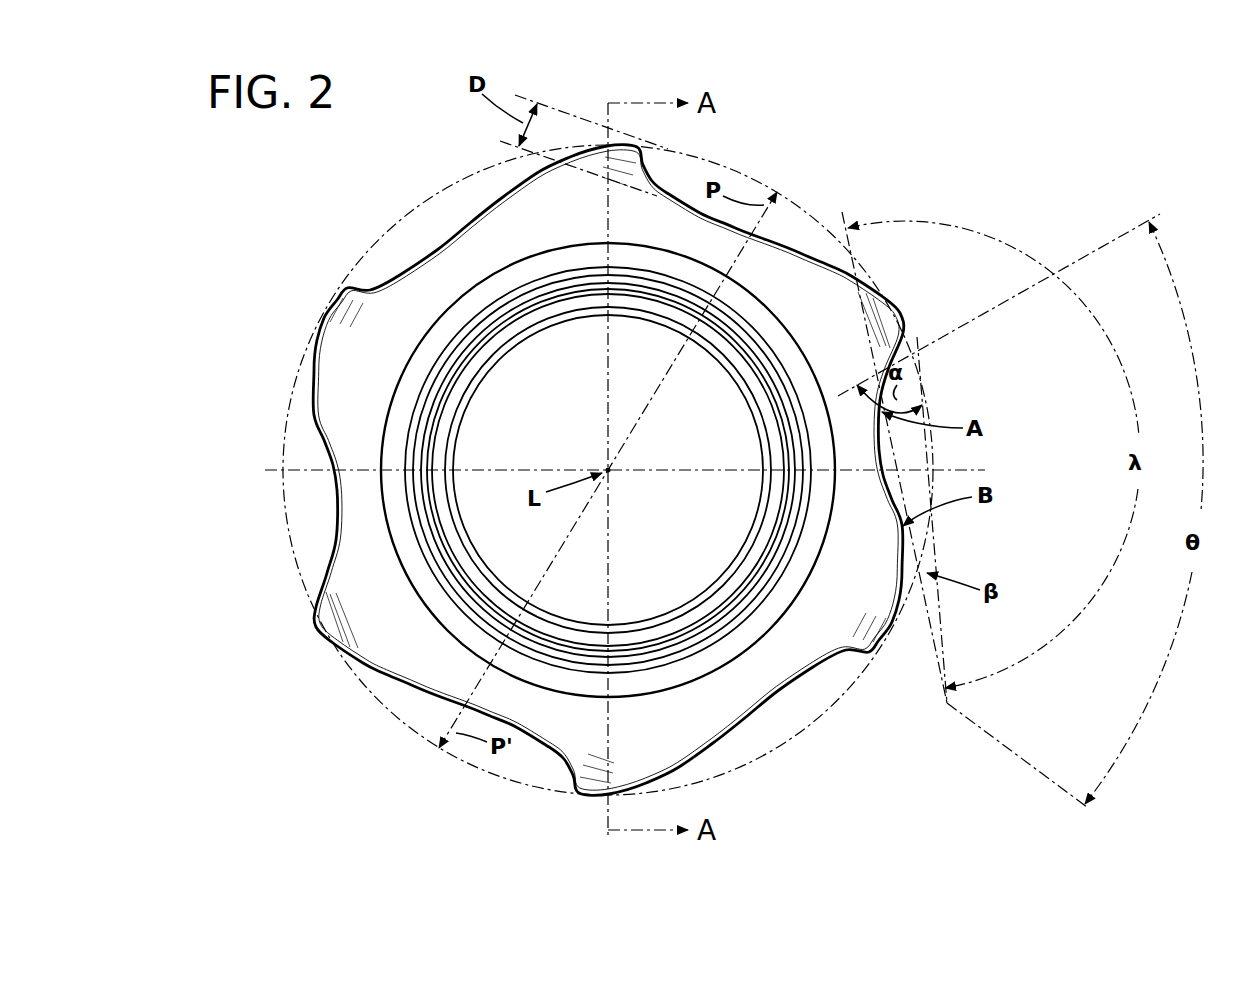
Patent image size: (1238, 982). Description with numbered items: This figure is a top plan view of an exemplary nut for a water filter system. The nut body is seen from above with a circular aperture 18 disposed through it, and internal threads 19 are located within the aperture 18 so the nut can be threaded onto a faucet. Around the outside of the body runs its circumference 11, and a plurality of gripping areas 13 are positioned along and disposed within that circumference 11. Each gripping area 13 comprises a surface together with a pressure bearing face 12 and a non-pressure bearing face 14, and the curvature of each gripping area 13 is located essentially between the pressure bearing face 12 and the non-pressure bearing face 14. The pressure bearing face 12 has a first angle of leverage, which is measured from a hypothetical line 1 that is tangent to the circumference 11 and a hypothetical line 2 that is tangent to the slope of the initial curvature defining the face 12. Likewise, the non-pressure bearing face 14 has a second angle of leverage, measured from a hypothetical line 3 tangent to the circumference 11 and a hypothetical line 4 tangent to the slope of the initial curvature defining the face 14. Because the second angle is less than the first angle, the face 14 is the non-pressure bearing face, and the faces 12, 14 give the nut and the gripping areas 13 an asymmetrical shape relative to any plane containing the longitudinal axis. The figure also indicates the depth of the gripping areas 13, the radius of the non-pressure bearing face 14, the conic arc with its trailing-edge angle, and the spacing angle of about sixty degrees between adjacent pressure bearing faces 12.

The hypothetical line 1 is at (917, 356).
The hypothetical line 2 is at (848, 386).
The hypothetical line 3 is at (932, 558).
The hypothetical line 4 is at (910, 540).
The circumference 11 is at (896, 318).
The pressure bearing face 12 is at (367, 284).
The gripping areas 13 is at (436, 221).
The non-pressure bearing face 14 is at (530, 173).
The circular aperture 18 is at (510, 387).
The internal threads 19 is at (574, 318).